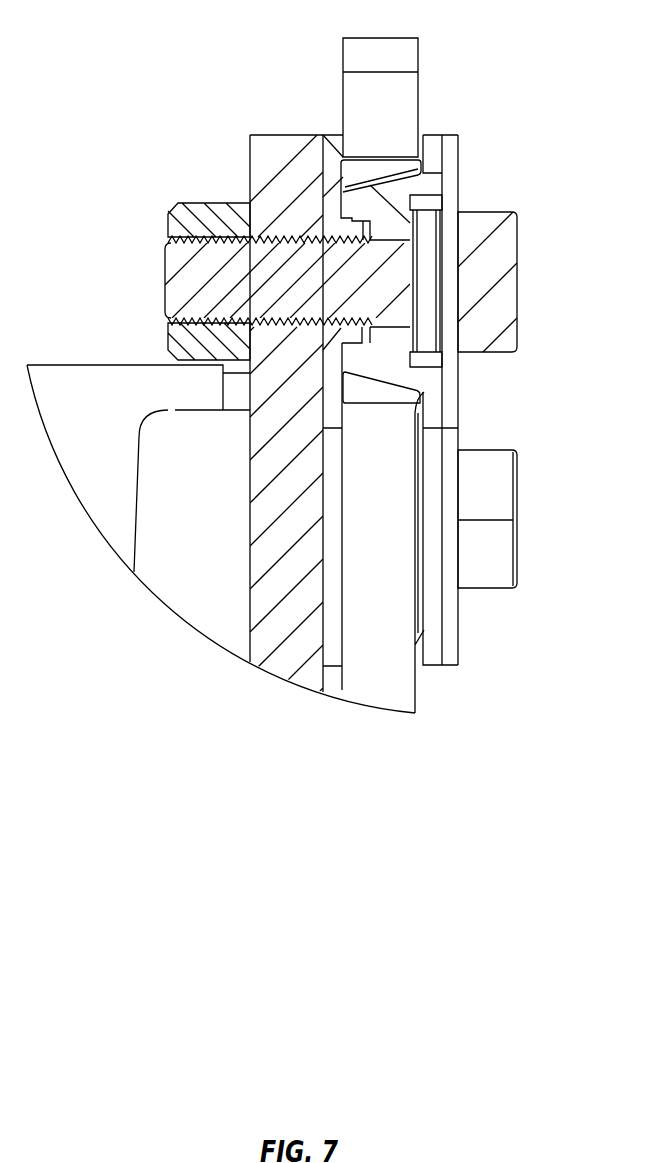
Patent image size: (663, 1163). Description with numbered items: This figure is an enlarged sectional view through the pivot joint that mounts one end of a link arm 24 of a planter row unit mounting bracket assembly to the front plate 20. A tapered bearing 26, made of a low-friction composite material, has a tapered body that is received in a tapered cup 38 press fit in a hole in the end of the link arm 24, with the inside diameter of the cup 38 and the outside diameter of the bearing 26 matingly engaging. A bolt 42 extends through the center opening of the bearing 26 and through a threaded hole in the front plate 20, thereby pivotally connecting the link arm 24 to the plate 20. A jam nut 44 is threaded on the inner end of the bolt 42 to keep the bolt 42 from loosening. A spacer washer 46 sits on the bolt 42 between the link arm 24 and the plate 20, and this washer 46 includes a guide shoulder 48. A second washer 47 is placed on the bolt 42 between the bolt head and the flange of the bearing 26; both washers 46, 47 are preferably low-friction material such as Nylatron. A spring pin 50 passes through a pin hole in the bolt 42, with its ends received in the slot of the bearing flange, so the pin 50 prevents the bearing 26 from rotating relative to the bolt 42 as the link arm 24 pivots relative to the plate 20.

The front plate 20 is at (257, 135).
The linking arm 24 is at (350, 40).
The tapered bearing 26 is at (433, 135).
The tapered cup 38 is at (372, 399).
The bolt 42 is at (519, 248).
The jam nut 44 is at (194, 203).
The spacer washer 46 is at (334, 135).
The second washer 47 is at (460, 156).
The guide shoulder 48 is at (348, 347).
The spring pin 50 is at (442, 299).